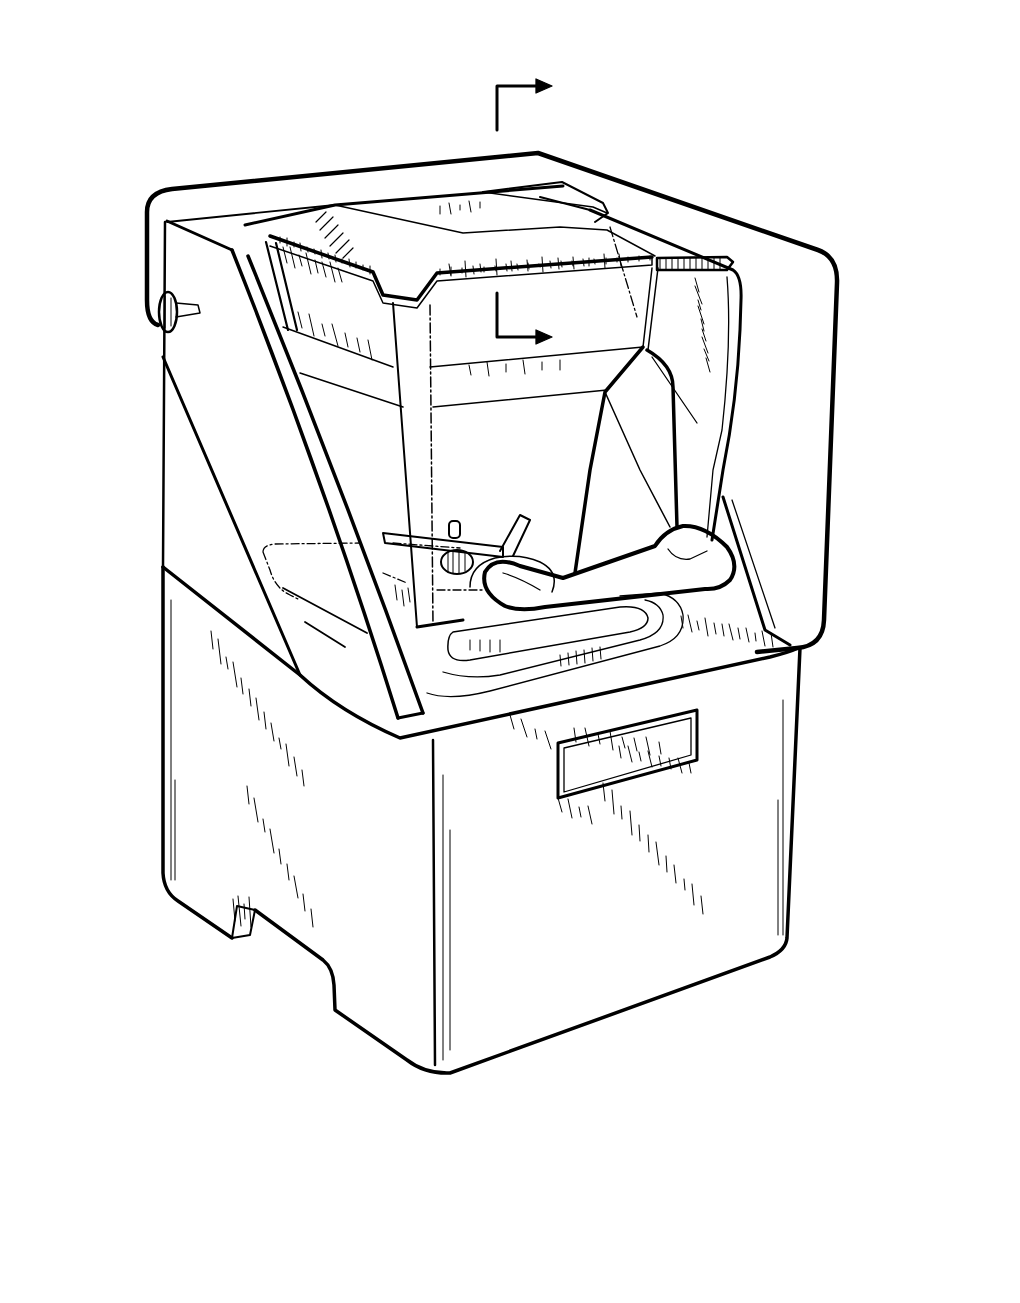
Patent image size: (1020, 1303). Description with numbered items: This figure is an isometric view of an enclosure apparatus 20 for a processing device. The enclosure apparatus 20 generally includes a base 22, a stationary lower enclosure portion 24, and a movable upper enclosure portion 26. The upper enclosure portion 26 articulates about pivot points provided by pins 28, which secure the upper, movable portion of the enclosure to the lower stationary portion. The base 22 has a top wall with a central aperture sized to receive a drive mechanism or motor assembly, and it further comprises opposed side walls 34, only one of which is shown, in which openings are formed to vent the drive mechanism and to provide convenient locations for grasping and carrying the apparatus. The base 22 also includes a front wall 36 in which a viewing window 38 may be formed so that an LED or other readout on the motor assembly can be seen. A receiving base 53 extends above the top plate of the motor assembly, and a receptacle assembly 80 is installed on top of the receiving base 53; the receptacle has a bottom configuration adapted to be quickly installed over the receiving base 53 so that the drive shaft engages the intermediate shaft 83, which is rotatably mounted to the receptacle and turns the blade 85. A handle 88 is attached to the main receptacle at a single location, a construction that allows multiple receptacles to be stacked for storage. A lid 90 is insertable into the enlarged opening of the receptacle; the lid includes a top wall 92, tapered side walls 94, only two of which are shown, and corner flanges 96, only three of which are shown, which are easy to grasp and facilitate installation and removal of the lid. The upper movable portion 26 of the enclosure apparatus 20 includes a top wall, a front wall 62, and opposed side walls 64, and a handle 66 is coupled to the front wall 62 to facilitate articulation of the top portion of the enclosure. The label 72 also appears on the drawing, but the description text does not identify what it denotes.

The enclosure apparatus 20 is at (217, 158).
The base 22 is at (154, 815).
The stationary lower enclosure portion 24 is at (155, 508).
The movable upper enclosure portion 26 is at (852, 384).
The pins 28 is at (152, 322).
The side walls 34 is at (334, 834).
The front wall 36 is at (521, 943).
The viewing window 38 is at (680, 738).
The receiving base 53 is at (551, 566).
The front wall 62 is at (786, 451).
The side walls 64 is at (259, 458).
The handle 66 is at (726, 552).
The left side wall 72 is at (204, 533).
The receptacle assembly 80 is at (756, 339).
The intermediate shaft 83 is at (455, 524).
The blade 85 is at (476, 532).
The handle 88 is at (688, 470).
The lid 90 is at (670, 222).
The top wall 92 is at (392, 252).
The tapered side walls 94 is at (352, 246).
The corner flanges 96 is at (258, 232).